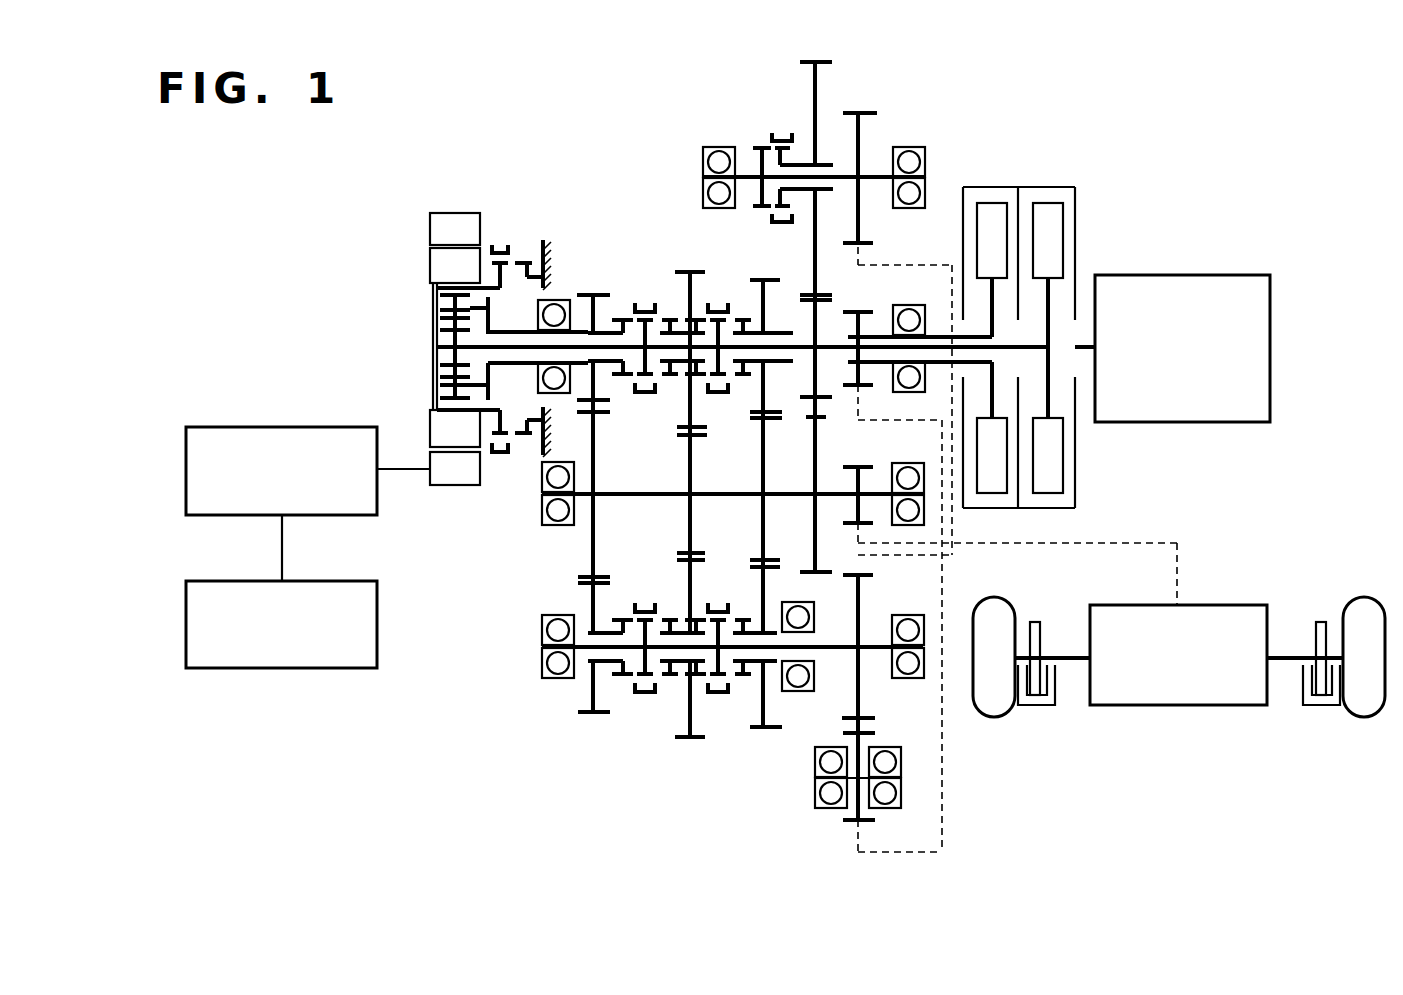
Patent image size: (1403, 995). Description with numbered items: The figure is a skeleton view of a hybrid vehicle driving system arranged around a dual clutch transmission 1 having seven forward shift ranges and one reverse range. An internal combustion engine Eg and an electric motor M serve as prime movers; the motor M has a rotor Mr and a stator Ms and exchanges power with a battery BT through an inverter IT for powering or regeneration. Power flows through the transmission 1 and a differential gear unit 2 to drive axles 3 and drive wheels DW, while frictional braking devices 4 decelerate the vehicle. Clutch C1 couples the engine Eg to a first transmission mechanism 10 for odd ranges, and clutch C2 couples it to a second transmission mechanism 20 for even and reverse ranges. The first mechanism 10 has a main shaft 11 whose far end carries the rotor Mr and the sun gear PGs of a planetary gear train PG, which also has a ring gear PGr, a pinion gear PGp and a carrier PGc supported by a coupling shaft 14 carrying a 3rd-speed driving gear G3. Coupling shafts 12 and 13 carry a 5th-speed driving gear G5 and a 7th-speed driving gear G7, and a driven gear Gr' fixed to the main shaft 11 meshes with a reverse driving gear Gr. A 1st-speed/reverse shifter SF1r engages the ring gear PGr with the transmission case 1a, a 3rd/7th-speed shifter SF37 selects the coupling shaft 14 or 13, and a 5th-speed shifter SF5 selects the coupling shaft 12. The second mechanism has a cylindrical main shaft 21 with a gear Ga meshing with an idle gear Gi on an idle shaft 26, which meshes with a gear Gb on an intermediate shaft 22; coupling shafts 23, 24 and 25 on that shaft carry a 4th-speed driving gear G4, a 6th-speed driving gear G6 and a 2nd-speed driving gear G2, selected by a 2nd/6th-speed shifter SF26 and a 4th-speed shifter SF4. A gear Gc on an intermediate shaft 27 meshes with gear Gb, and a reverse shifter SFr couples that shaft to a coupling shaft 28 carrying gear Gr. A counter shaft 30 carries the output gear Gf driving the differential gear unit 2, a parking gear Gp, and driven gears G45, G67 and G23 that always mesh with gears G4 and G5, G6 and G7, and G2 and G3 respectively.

The transmission 1 is at (583, 170).
The transmission case 1a is at (546, 240).
The first transmission mechanism 10 is at (628, 195).
The main shaft 11 is at (940, 346).
The coupling shaft 12 is at (757, 365).
The coupling shaft 13 is at (687, 364).
The coupling shaft 14 is at (603, 326).
The differential gear unit 2 is at (1178, 706).
The drive axles 3 is at (1070, 660).
The braking devices 4 is at (1040, 614).
The second transmission mechanism 20 is at (527, 692).
The main shaft 21 is at (940, 365).
The intermediate shaft 22 is at (842, 652).
The coupling shaft 23 is at (757, 666).
The coupling shaft 24 is at (685, 664).
The coupling shaft 25 is at (588, 664).
The idle shaft 26 is at (815, 784).
The intermediate shaft 27 is at (868, 176).
The coupling shaft 28 is at (797, 157).
The counter shaft 30 is at (607, 494).
The electric motor M is at (422, 348).
The stator Ms is at (447, 213).
The rotor Mr is at (430, 265).
The planetary gear train PG is at (417, 343).
The carrier PGc is at (438, 296).
The pinion gear PGp is at (438, 322).
The sun gear PGs is at (438, 343).
The ring gear PGr is at (437, 408).
The 1st-speed/reverse shifter SF1r is at (510, 240).
The 3rd/7th-speed shifter SF37 is at (644, 292).
The 5th-speed shifter SF5 is at (720, 297).
The reverse shifter SFr is at (760, 128).
The 2nd/6th-speed shifter SF26 is at (640, 699).
The 4th-speed shifter SF4 is at (718, 699).
The 2nd-speed driving gear G2 is at (588, 713).
The 3rd-speed driving gear G3 is at (602, 402).
The 4th-speed driving gear G4 is at (776, 730).
The 5th-speed driving gear G5 is at (767, 279).
The 6th-speed driving gear G6 is at (690, 739).
The 7th-speed driving gear G7 is at (707, 434).
The 2nd/3rd-speed driven gear G23 is at (602, 572).
The 4th/5th-speed driven gear G45 is at (750, 561).
The 6th/7th-speed driven gear G67 is at (700, 557).
The reverse driving gear Gr is at (839, 113).
The driven gear Gr' is at (802, 341).
The gear Gc is at (877, 112).
The gear Ga is at (844, 312).
The output gear Gf is at (860, 465).
The parking gear Gp is at (812, 574).
The gear Gb is at (876, 719).
The idle gear Gi is at (850, 822).
The clutch C1 is at (1055, 178).
The clutch C2 is at (993, 178).
The internal combustion engine Eg is at (1177, 275).
The inverter IT is at (228, 427).
The battery BT is at (230, 581).
The drive wheels DW is at (994, 718).